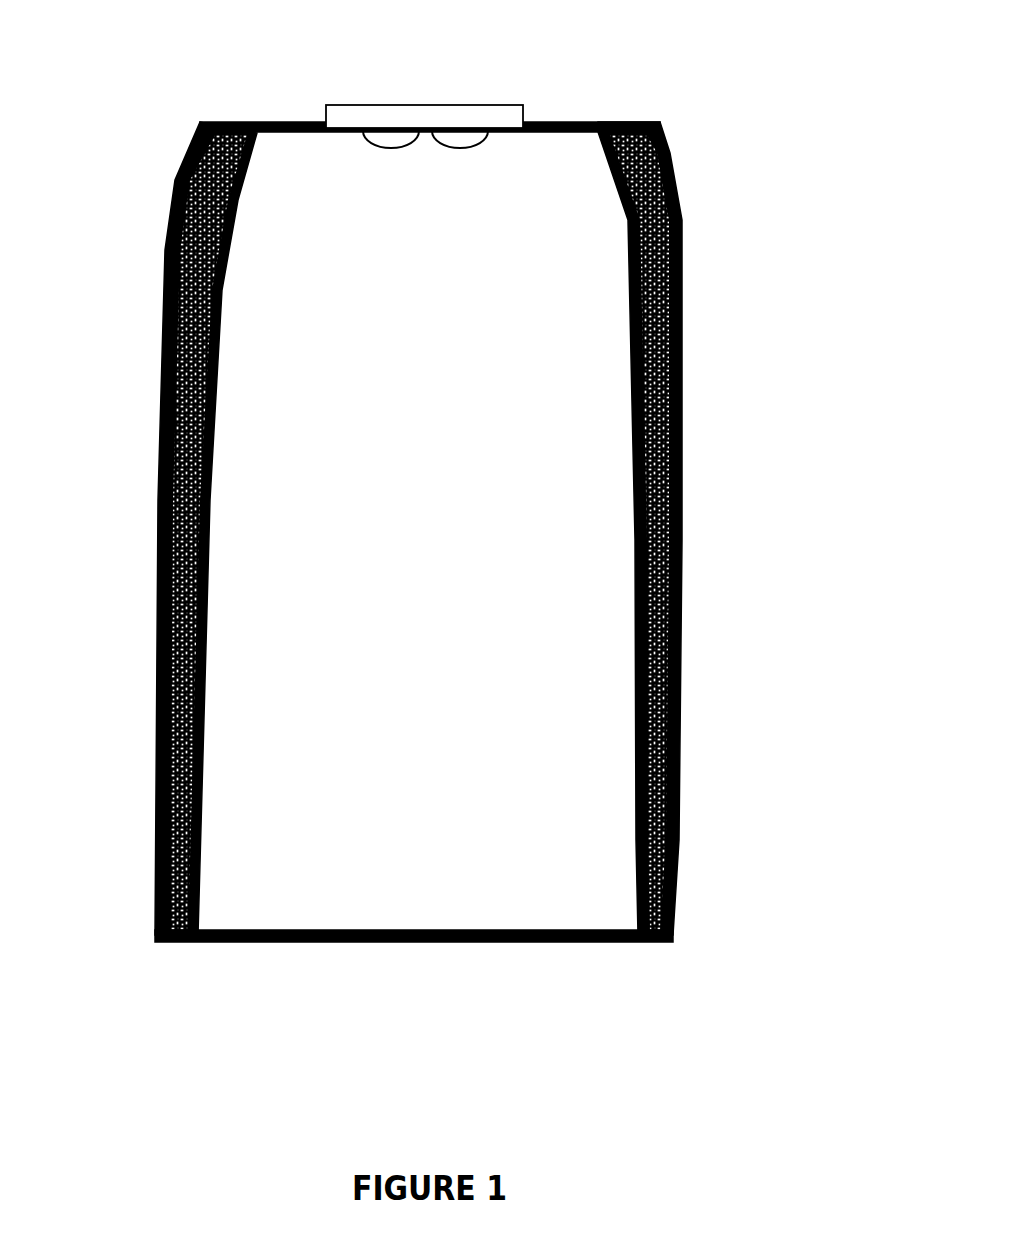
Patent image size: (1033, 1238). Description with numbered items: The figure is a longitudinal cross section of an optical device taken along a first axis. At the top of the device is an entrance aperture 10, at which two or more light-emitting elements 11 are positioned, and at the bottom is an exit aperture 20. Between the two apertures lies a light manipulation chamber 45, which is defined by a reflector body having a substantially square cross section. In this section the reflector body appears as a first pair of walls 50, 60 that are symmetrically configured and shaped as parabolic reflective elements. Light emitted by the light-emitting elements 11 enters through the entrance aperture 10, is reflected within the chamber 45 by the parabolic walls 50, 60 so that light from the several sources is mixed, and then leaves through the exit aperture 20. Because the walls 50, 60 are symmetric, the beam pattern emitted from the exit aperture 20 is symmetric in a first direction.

The entrance aperture 10 is at (578, 122).
The light-emitting elements 11 is at (450, 150).
The exit aperture 20 is at (460, 955).
The light manipulation chamber 45 is at (428, 537).
The wall 50 is at (695, 568).
The wall 60 is at (147, 538).